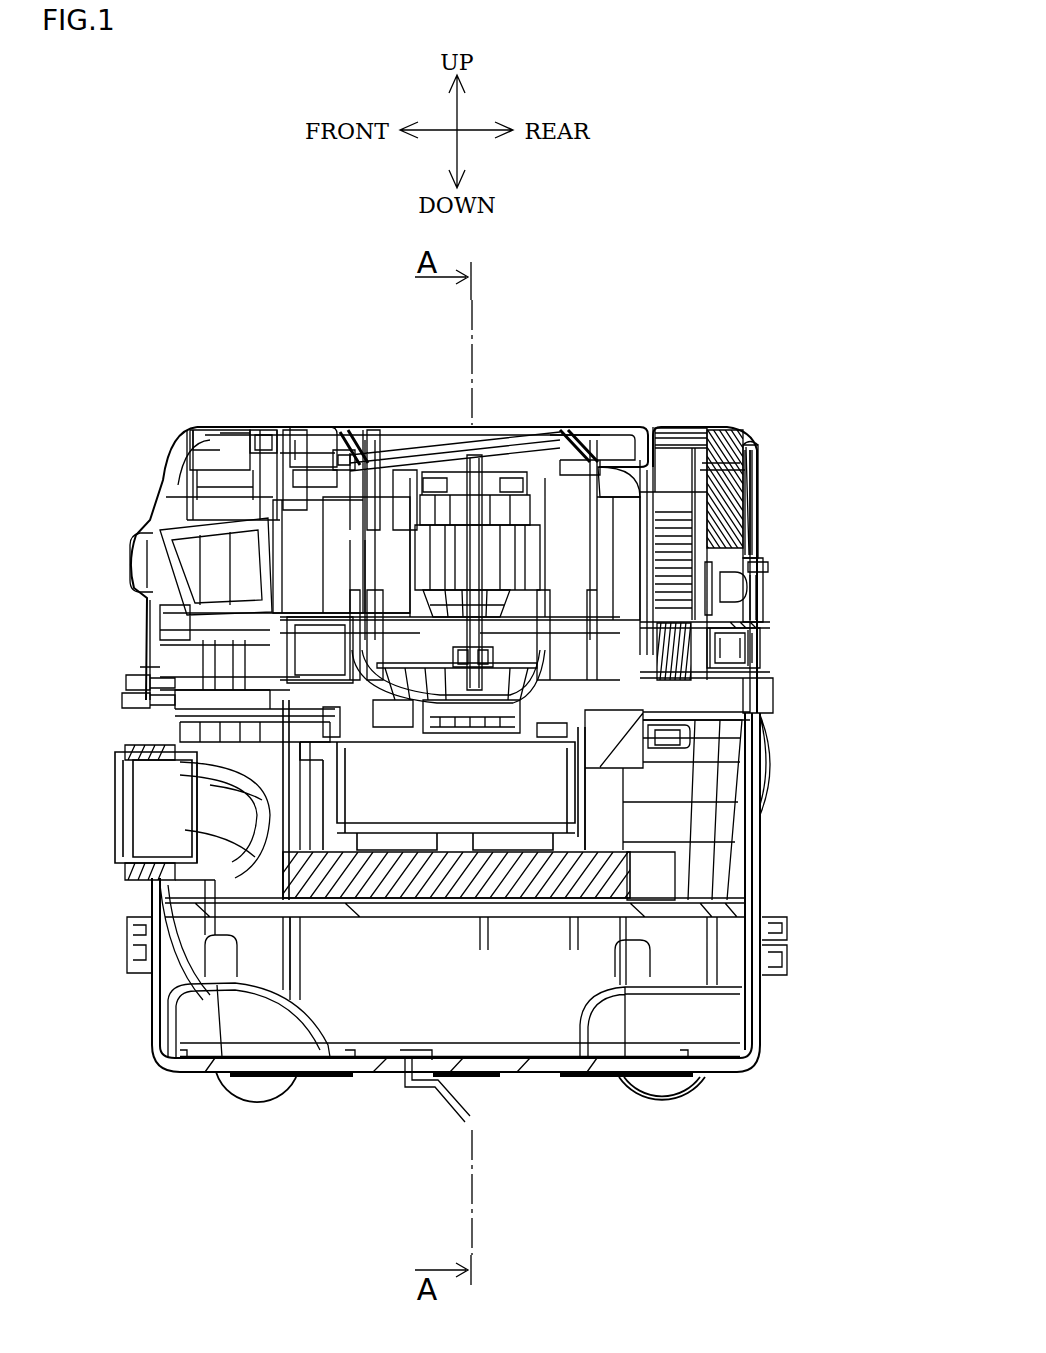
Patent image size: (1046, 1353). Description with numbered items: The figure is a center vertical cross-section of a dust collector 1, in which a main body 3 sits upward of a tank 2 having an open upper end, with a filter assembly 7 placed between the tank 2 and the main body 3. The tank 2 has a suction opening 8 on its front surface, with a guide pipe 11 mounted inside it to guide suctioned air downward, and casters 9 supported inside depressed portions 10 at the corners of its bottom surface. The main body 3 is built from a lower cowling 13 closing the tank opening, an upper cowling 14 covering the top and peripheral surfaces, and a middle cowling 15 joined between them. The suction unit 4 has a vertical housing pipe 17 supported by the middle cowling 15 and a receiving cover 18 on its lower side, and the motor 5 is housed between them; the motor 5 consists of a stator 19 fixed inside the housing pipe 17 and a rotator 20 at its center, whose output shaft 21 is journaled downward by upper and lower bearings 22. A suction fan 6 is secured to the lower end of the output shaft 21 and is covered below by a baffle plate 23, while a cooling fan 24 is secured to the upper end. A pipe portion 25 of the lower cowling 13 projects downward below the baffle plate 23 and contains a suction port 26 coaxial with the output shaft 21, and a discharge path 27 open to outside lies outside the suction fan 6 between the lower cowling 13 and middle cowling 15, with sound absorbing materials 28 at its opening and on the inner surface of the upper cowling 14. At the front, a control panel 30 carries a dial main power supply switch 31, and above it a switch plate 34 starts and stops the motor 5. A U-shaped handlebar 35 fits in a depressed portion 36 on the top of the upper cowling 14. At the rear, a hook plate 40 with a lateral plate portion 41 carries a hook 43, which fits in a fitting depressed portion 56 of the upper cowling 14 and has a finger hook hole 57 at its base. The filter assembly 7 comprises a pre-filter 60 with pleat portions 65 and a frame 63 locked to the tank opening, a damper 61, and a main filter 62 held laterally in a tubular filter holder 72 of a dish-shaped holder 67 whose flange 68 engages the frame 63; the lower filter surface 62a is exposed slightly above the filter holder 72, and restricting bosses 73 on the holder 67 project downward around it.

The dust collector 1 is at (758, 325).
The tank 2 is at (778, 879).
The main body 3 is at (551, 414).
The suction unit 4 is at (520, 438).
The motor 5 is at (437, 565).
The suction fan 6 is at (770, 675).
The filter assembly 7 is at (763, 816).
The suction opening 8 is at (132, 813).
The caster 9 is at (255, 1100).
The depressed portion 10 is at (198, 1045).
The guide pipe 11 is at (193, 880).
The lower cowling 13 is at (750, 712).
The upper cowling 14 is at (697, 440).
The middle cowling 15 is at (193, 648).
The housing pipe 17 is at (570, 434).
The receiving cover 18 is at (702, 650).
The stator 19 is at (376, 430).
The rotator 20 is at (458, 450).
The output shaft 21 is at (476, 705).
The bearing 22 is at (498, 445).
The baffle plate 23 is at (412, 705).
The cooling fan 24 is at (432, 455).
The pipe portion 25 is at (372, 714).
The suction port 26 is at (460, 700).
The discharge path 27 is at (743, 557).
The sound absorbing material 28 is at (343, 438).
The control panel 30 is at (142, 622).
The main power supply switch 31 is at (143, 558).
The switch plate 34 is at (198, 428).
The handlebar 35 is at (300, 428).
The depressed portion 36 is at (283, 440).
The hook plate 40 is at (792, 657).
The lateral plate portion 41 is at (762, 622).
The hook 43 is at (760, 488).
The fitting depressed portion 56 is at (762, 455).
The finger hook hole 57 is at (757, 600).
The pre-filter 60 is at (407, 912).
The damper 61 is at (480, 893).
The main filter 62 is at (533, 815).
The lower filter surface 62a is at (428, 850).
The frame 63 is at (132, 702).
The pleat portion 65 is at (750, 767).
The holder 67 is at (127, 772).
The flange 68 is at (130, 683).
The filter holder 72 is at (333, 860).
The restricting boss 73 is at (302, 903).